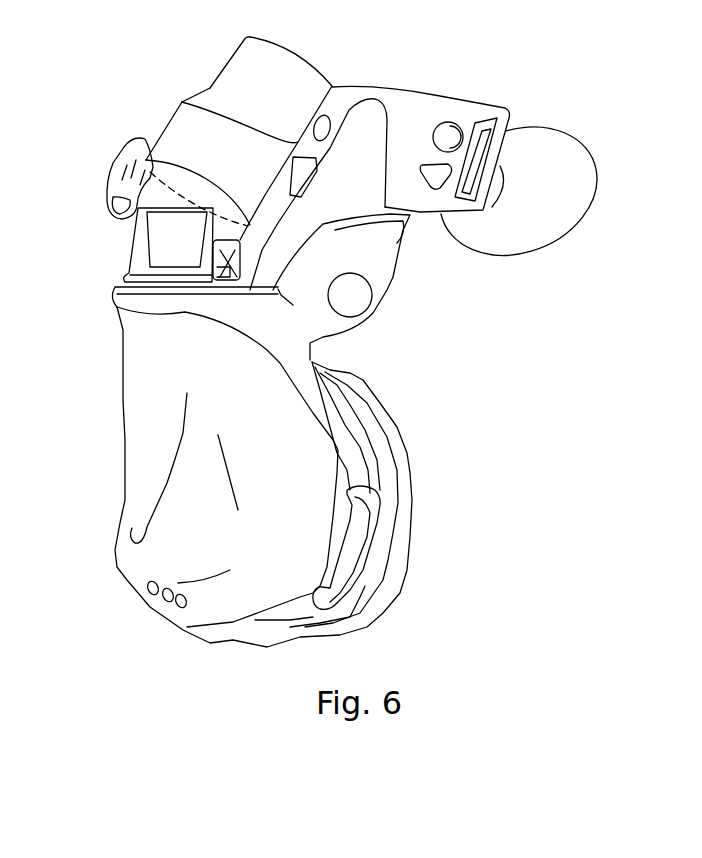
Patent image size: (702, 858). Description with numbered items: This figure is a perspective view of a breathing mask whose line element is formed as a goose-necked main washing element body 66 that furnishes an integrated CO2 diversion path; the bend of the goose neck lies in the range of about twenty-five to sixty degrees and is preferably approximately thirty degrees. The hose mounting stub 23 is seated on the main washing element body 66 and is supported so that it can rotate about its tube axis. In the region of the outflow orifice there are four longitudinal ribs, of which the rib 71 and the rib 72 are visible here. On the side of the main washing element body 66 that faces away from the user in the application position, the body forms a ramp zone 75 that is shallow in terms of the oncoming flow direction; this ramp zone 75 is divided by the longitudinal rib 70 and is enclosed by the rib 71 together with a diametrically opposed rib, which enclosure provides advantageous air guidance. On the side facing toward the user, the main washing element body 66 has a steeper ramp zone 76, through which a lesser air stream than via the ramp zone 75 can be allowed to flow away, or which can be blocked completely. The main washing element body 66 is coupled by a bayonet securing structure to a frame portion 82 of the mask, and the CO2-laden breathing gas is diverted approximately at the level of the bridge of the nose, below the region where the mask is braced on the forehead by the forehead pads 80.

The hose mounting stub 23 is at (237, 80).
The main washing element body 66 is at (107, 237).
The longitudinal rib 70 is at (137, 255).
The ramp zone 75 is at (190, 256).
The longitudinal rib 71 is at (212, 277).
The longitudinal rib 72 is at (222, 280).
The steeper ramp zone 76 is at (228, 273).
The frame portion 82 is at (140, 303).
The forehead pads 80 is at (493, 243).